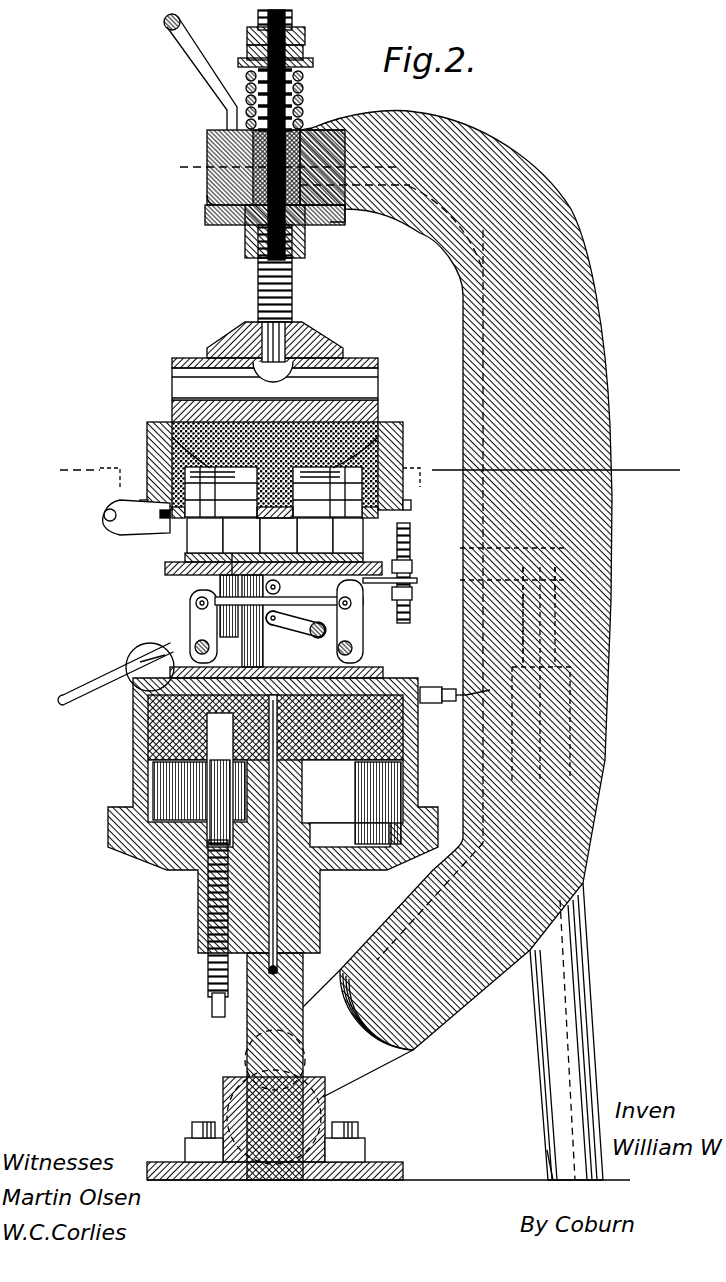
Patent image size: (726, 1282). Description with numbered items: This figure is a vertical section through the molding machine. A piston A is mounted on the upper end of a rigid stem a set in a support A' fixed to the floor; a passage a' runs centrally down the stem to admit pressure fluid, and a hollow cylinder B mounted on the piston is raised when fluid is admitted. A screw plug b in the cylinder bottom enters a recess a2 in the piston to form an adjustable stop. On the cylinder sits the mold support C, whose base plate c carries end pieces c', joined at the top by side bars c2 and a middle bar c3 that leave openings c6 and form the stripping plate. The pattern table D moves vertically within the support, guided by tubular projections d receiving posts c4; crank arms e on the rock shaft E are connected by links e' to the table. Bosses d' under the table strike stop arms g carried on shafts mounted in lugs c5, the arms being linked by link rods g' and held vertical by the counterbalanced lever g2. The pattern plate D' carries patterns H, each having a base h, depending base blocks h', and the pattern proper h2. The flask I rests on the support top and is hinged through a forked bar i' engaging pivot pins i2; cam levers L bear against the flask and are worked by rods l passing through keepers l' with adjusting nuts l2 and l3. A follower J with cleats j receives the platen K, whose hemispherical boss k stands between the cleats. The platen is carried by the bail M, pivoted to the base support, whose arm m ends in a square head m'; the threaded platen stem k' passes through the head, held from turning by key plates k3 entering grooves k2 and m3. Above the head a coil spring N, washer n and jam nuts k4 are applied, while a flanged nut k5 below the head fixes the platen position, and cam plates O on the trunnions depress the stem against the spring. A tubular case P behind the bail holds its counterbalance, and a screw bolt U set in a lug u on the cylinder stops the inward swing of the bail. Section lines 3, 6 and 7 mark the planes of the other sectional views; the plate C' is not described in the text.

The bail M is at (595, 382).
The tubular case P is at (566, 1031).
The section line 7- 7 is at (559, 1165).
The support A' is at (275, 1128).
The standard or stem a is at (279, 1066).
The piston A is at (266, 815).
The rock shaft E is at (275, 727).
The hollow cylinder B is at (400, 797).
The recess a2 is at (215, 740).
The screw plug b is at (213, 915).
The passage a' is at (311, 834).
The lug u is at (432, 703).
The screw bolt U is at (484, 692).
The lugs c5 is at (140, 655).
The base plate c is at (115, 674).
The lever g2 is at (110, 690).
The plate C' is at (291, 669).
The pattern table D is at (209, 578).
The pattern plate D' is at (250, 555).
The base blocks h' is at (260, 535).
The link rods g' is at (241, 546).
The middle bar c3 is at (278, 535).
The links e' is at (325, 554).
The mold support C is at (193, 626).
The stop arms g is at (241, 640).
The bosses d' is at (288, 606).
The end piece c' is at (178, 621).
The tubular projections d is at (254, 624).
The crank arms e is at (296, 609).
The posts c4 is at (318, 622).
The cam levers L is at (410, 530).
The keepers l' is at (402, 579).
The rods l is at (509, 561).
The nut l2 is at (463, 580).
The nut l3 is at (463, 612).
The flask I is at (380, 420).
The patterns H is at (275, 464).
The base portion h is at (273, 492).
The pattern proper h2 is at (172, 440).
The openings c6 is at (147, 462).
The side bars c2 is at (165, 545).
The pivot pins i2 is at (105, 520).
The forked bar i' is at (111, 503).
The section line 3- 3 is at (369, 471).
The follower J is at (172, 402).
The cleats j is at (378, 380).
The platen K is at (343, 352).
The hemispherical boss k is at (275, 332).
The platen stem k' is at (289, 290).
The grooves k2 is at (245, 240).
The grooves m3 is at (205, 222).
The flanged nut k5 is at (345, 215).
The square head m' is at (254, 162).
The arm m is at (344, 109).
The section line 6- 6 is at (274, 169).
The key plates k3 is at (285, 155).
The jam nuts k4 is at (305, 30).
The washer n is at (305, 52).
The coil spring N is at (303, 85).
The cam plates O is at (200, 72).